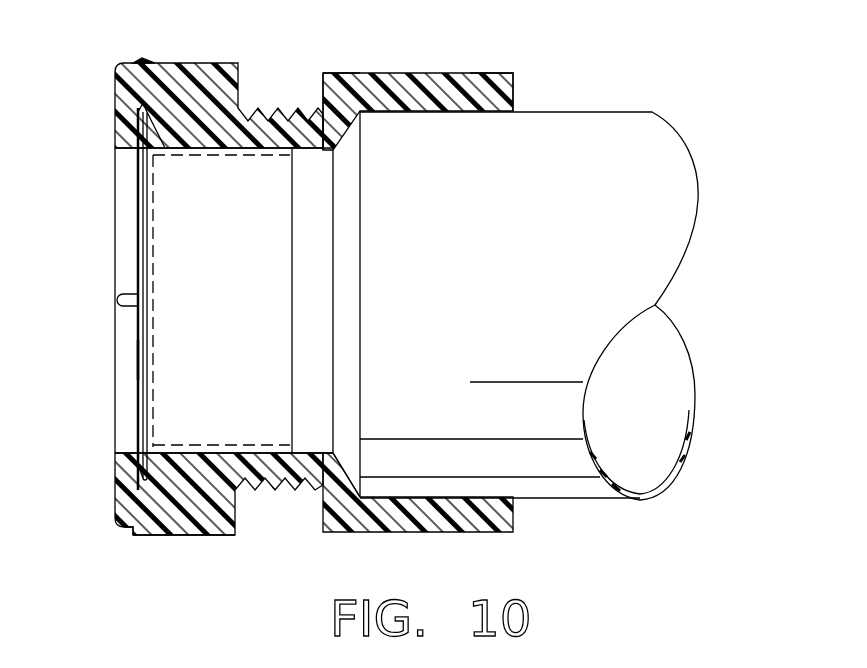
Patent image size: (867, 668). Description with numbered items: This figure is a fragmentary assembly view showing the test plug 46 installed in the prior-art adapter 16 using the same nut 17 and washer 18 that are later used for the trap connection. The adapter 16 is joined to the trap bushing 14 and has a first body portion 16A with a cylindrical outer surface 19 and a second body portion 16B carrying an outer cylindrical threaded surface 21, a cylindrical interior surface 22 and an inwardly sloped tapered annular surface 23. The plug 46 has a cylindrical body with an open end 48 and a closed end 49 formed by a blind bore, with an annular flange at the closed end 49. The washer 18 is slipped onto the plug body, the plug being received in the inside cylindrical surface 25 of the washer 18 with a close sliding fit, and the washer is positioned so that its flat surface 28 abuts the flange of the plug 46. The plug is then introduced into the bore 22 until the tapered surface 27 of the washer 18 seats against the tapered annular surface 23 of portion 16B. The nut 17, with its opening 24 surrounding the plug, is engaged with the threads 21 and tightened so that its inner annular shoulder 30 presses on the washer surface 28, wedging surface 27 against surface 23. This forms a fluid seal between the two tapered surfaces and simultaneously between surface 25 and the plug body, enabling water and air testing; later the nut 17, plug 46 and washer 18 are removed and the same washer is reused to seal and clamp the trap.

The trap bushing 14 is at (562, 136).
The adapter 16 is at (440, 533).
The first body portion 16A is at (468, 73).
The second body portion 16B is at (284, 104).
The nut 17 is at (163, 536).
The washer 18 is at (152, 442).
The cylindrical outer surface 19 is at (390, 73).
The outer cylindrical threaded surface 21 is at (244, 113).
The cylindrical interior surface 22 is at (222, 445).
The tapered annular surface 23 is at (213, 526).
The opening 24 is at (130, 187).
The inside cylindrical surface 25 is at (175, 156).
The tapered surface 27 is at (186, 536).
The flat surface 28 is at (143, 150).
The inner annular shoulder 30 is at (142, 474).
The plug 46 is at (128, 355).
The open end 48 is at (292, 307).
The closed end 49 is at (138, 236).